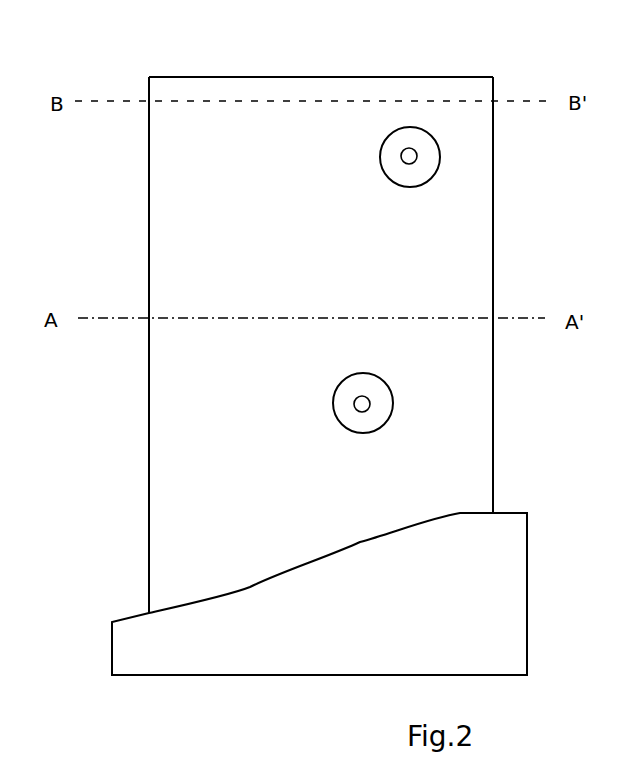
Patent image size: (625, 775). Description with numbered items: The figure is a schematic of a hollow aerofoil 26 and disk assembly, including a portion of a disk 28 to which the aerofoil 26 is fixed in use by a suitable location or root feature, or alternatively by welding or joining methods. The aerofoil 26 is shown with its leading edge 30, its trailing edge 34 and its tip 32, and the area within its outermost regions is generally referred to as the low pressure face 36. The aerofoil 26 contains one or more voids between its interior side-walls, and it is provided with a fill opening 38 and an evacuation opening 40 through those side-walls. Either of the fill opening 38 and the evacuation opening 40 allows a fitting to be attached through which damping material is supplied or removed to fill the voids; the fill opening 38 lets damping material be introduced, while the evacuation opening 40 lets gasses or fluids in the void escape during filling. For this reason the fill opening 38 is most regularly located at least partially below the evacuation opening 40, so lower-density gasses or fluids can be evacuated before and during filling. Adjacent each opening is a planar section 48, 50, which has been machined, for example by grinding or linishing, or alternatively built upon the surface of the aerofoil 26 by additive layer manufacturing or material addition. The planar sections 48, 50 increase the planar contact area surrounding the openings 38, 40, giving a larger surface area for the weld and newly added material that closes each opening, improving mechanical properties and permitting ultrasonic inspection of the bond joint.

The aerofoil 26 is at (477, 268).
The disk 28 is at (490, 593).
The leading edge 30 is at (149, 400).
The tip 32 is at (286, 77).
The trailing edge 34 is at (495, 396).
The low pressure face 36 is at (296, 320).
The fill opening 38 is at (366, 404).
The evacuation opening 40 is at (413, 156).
The planar section 48 is at (370, 422).
The planar section 50 is at (418, 170).